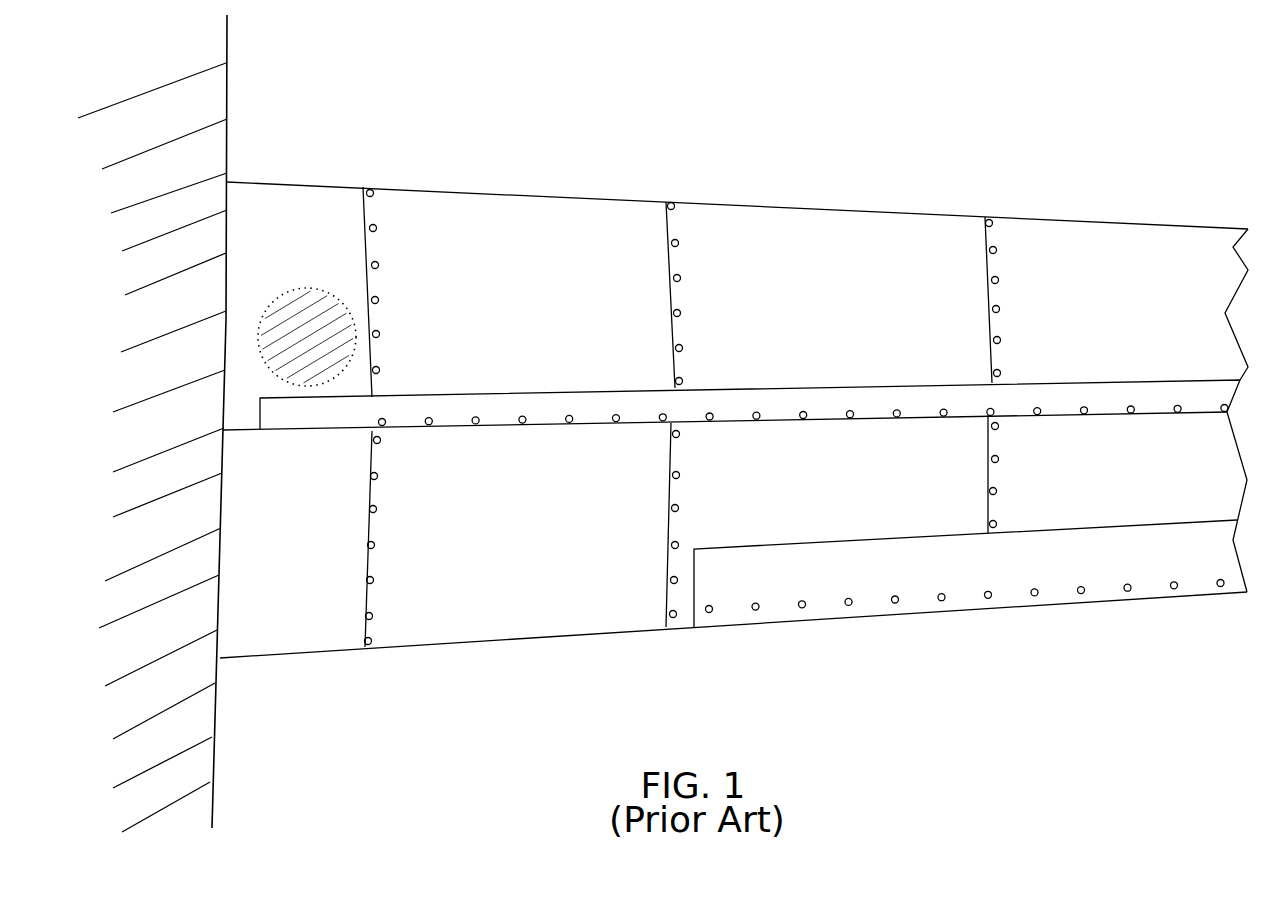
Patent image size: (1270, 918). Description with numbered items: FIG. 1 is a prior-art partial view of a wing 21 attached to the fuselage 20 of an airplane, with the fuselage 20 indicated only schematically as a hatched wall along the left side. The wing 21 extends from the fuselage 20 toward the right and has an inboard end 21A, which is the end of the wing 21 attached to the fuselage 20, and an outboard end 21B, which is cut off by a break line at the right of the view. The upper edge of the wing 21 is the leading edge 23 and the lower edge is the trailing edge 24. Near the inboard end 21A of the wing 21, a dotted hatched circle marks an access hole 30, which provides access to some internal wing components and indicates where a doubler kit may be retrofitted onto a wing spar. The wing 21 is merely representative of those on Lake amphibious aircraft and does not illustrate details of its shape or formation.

The fuselage 20 is at (202, 110).
The wing 21 is at (497, 207).
The inboard end 21A is at (240, 193).
The outboard end 21B is at (1112, 240).
The leading edge 23 is at (729, 203).
The trailing edge 24 is at (477, 645).
The access hole 30 is at (317, 300).